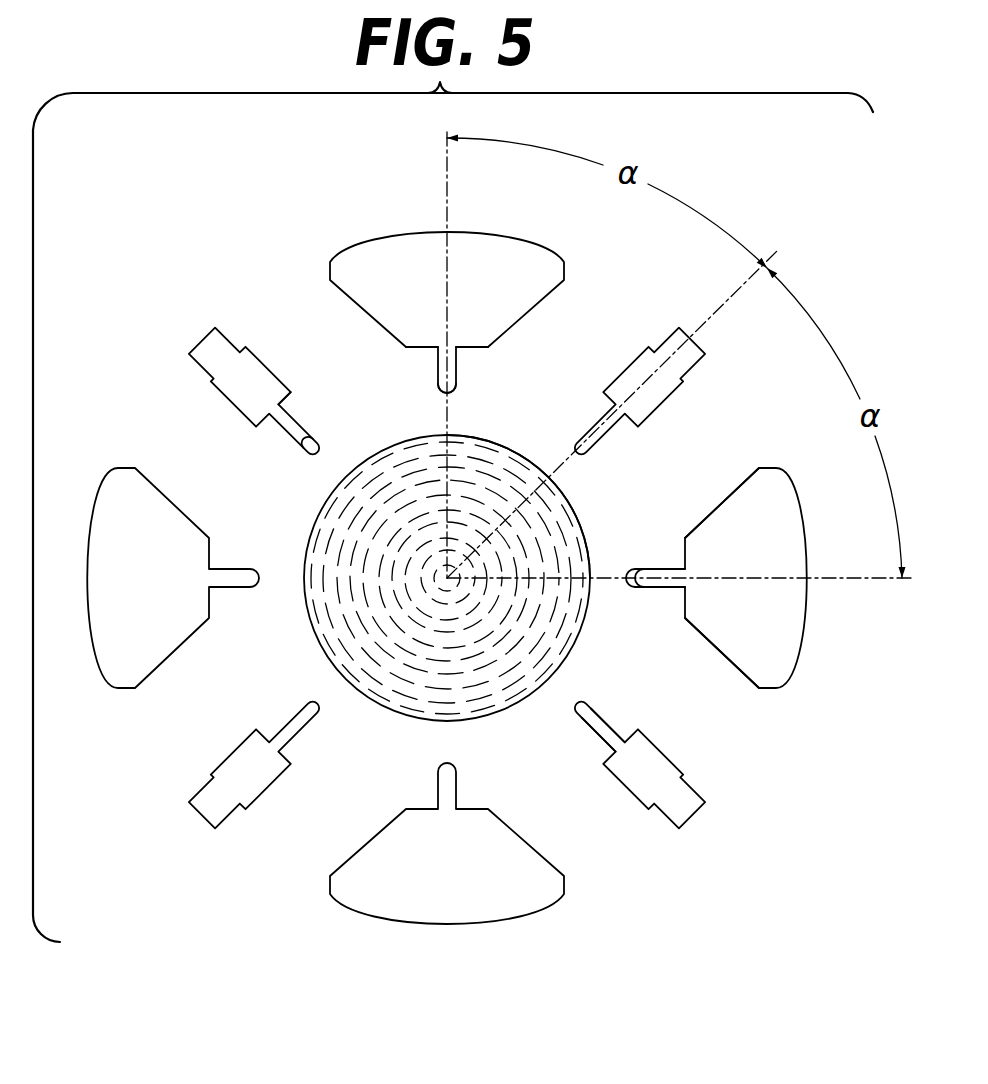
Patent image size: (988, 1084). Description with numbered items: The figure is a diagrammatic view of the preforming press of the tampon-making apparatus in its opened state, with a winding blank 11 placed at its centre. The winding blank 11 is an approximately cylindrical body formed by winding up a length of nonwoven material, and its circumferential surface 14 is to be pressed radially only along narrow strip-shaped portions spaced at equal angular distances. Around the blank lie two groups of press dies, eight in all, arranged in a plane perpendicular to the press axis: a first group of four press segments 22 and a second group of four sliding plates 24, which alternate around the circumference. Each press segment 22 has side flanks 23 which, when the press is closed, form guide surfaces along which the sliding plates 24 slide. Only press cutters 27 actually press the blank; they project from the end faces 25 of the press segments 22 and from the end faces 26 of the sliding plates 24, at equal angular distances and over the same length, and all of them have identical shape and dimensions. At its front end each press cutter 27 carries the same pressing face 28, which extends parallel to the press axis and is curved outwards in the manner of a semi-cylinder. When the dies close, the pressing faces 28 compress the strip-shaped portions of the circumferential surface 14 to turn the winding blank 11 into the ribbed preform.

The winding blank 11 is at (298, 639).
The circumferential surface 14 is at (572, 502).
The press segments 22 is at (371, 300).
The side flanks 23 is at (712, 504).
The sliding plates 24 is at (221, 348).
The end face 25 is at (472, 351).
The end face 26 is at (282, 400).
The press cutters 27 is at (455, 387).
The pressing faces 28 is at (633, 570).